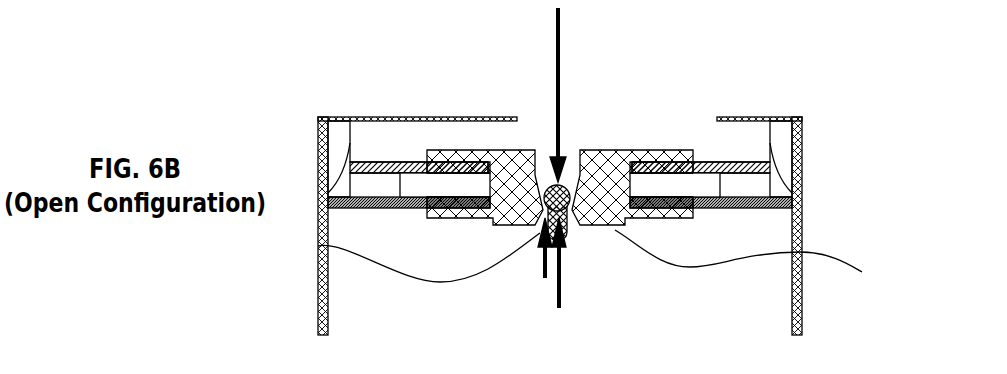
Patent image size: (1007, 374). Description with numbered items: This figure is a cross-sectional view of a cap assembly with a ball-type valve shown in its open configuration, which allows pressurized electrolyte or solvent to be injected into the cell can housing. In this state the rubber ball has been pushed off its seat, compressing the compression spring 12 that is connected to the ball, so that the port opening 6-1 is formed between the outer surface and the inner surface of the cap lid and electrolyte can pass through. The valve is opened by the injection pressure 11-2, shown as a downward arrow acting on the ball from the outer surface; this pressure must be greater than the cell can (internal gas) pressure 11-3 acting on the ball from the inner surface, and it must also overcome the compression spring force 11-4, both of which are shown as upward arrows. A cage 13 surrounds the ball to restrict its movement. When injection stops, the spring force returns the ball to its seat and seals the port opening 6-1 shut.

The injection pressure 11-2 is at (558, 63).
The cell can (internal gas) pressure 11-3 is at (559, 290).
The compression spring force 11-4 is at (545, 272).
The port opening 6-1 is at (577, 183).
The compression spring 12 is at (318, 247).
The cage 13 is at (755, 226).